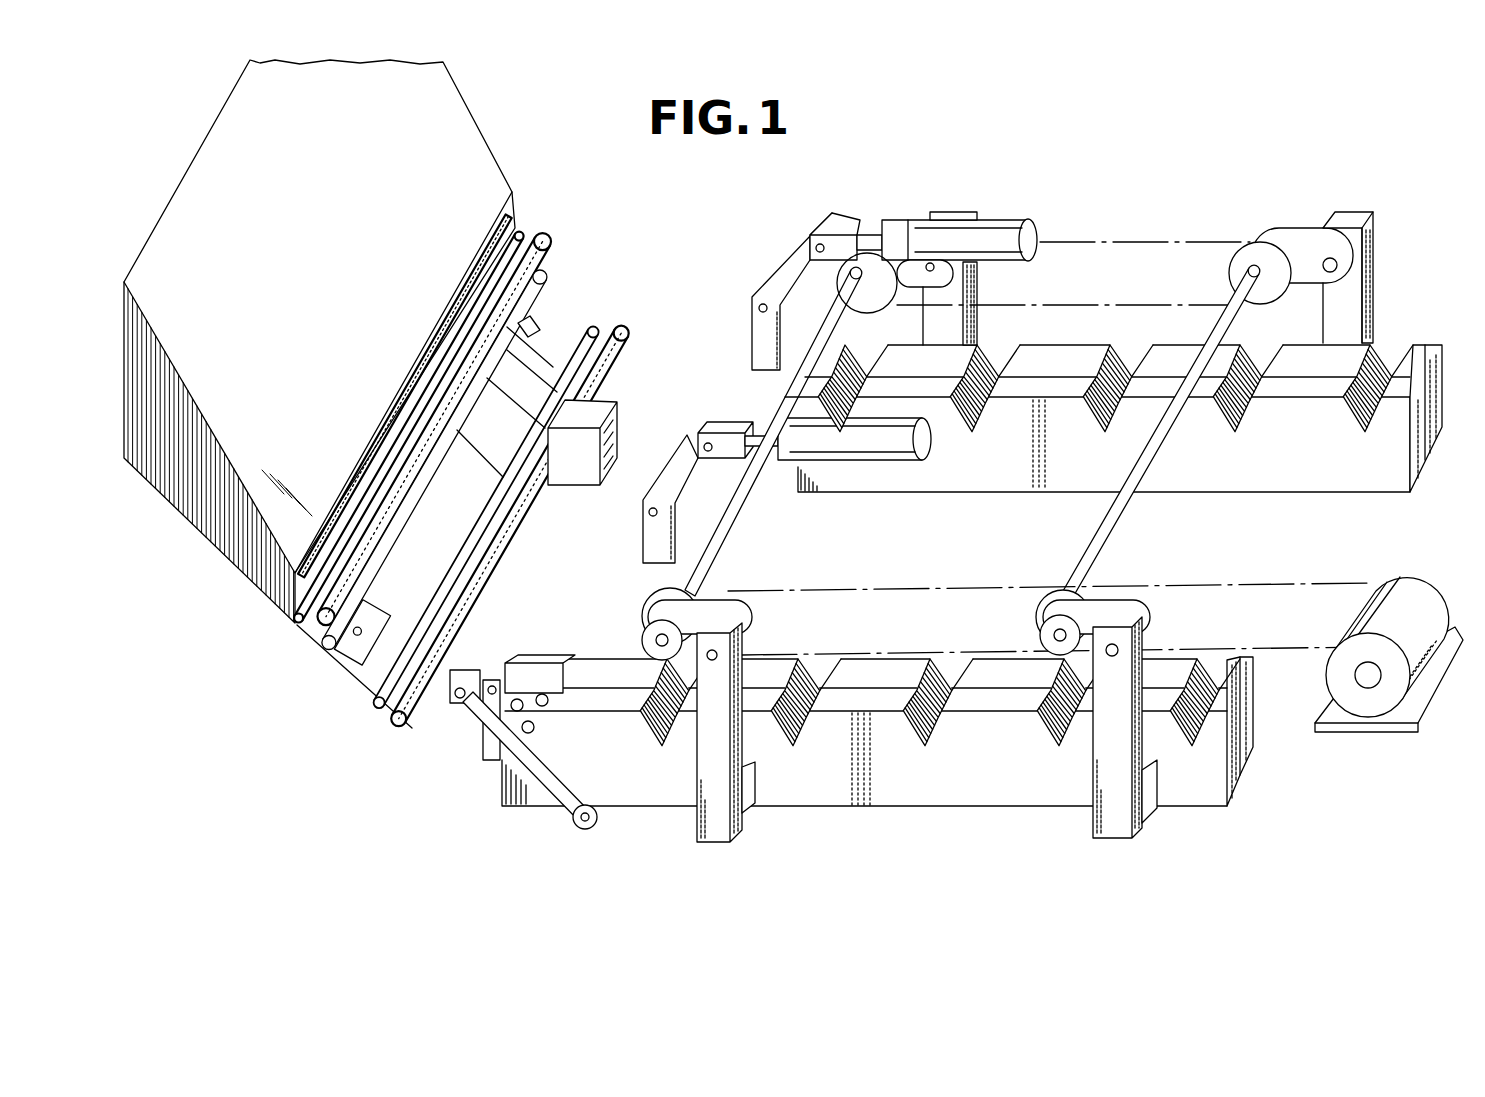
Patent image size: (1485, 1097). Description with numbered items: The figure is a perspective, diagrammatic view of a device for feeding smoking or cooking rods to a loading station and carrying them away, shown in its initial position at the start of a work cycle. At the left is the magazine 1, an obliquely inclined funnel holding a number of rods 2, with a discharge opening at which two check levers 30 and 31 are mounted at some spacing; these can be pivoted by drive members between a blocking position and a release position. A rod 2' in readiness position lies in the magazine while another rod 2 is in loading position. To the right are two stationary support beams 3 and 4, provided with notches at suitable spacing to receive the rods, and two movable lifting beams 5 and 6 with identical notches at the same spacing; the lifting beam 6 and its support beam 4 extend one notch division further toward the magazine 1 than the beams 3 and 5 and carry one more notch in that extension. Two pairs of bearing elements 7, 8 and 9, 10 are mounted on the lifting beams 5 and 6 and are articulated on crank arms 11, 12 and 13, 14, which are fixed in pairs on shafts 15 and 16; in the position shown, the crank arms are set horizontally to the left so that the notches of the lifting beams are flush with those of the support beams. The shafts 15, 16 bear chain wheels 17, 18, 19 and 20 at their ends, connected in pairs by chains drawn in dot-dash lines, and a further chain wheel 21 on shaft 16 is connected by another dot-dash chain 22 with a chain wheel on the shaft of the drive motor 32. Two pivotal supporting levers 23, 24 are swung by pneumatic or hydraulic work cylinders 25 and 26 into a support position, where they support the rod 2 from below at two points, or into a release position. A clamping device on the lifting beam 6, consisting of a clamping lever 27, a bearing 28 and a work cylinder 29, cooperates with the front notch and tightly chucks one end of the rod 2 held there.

The magazine 1 is at (207, 520).
The smoking or cooking rod 2 is at (399, 480).
The smoking or cooking rod 2' is at (536, 520).
The support beam 3 is at (1063, 483).
The support beam 4 is at (873, 670).
The lifting beam 5 is at (1155, 357).
The lifting beam 6 is at (997, 797).
The bearing element 7 is at (970, 321).
The bearing element 8 is at (1345, 213).
The bearing element 9 is at (717, 833).
The bearing element 10 is at (1115, 833).
The crank arm 11 is at (907, 224).
The crank arm 12 is at (1290, 234).
The crank arm 13 is at (697, 616).
The crank arm 14 is at (1088, 623).
The shaft 15 is at (827, 336).
The shaft 16 is at (1247, 314).
The chain wheel 17 is at (873, 295).
The chain wheel 18 is at (1243, 257).
The chain wheel 19 is at (640, 605).
The chain wheel 20 is at (1045, 620).
The chain wheel 21 is at (1063, 588).
The chain 22 is at (1237, 583).
The supporting lever 23 is at (783, 273).
The supporting lever 24 is at (680, 472).
The work cylinder 25 is at (1000, 222).
The work cylinder 26 is at (928, 449).
The clamping lever 27 is at (520, 670).
The bearing 28 is at (493, 743).
The work cylinder 29 is at (567, 813).
The check lever 30 is at (347, 648).
The check lever 31 is at (531, 334).
The drive motor 32 is at (1370, 717).